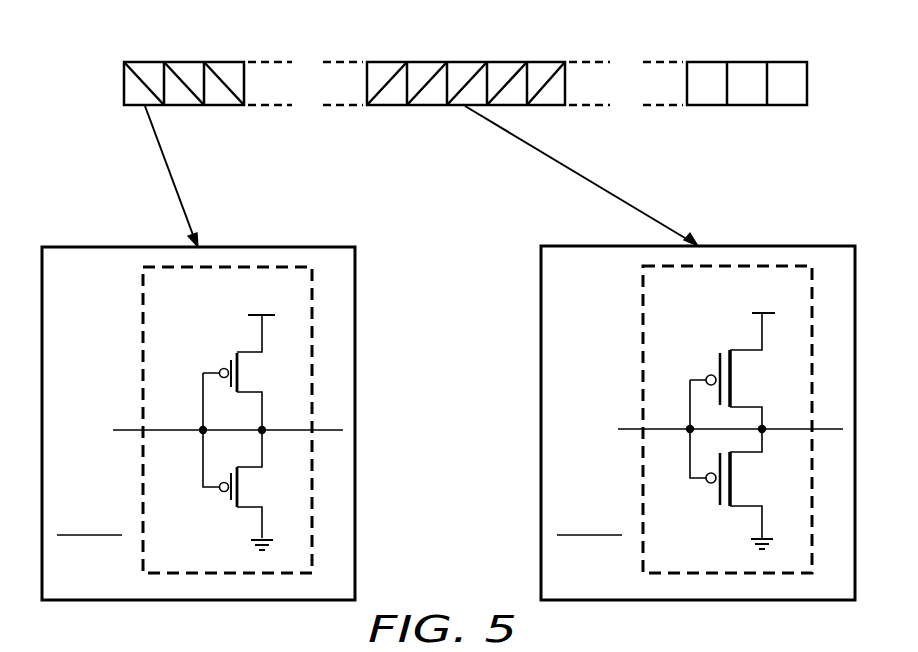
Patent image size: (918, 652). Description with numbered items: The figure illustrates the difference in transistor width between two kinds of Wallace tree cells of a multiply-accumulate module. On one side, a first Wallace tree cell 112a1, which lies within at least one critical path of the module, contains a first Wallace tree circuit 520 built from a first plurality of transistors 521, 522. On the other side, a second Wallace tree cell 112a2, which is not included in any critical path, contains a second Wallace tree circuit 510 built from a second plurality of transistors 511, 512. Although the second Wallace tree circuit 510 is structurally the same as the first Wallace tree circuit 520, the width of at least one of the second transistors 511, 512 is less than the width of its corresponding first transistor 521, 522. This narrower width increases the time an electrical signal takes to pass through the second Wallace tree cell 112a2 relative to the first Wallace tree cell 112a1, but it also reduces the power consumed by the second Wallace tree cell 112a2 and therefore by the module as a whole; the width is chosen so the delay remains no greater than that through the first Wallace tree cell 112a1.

The first Wallace tree cell 112a1 is at (465, 62).
The second Wallace tree cell 112a2 is at (145, 62).
The second Wallace tree circuit 510 is at (202, 534).
The second transistor 511 is at (230, 366).
The second transistor 512 is at (222, 498).
The first Wallace tree circuit 520 is at (710, 552).
The first transistor 521 is at (736, 371).
The first transistor 522 is at (737, 483).